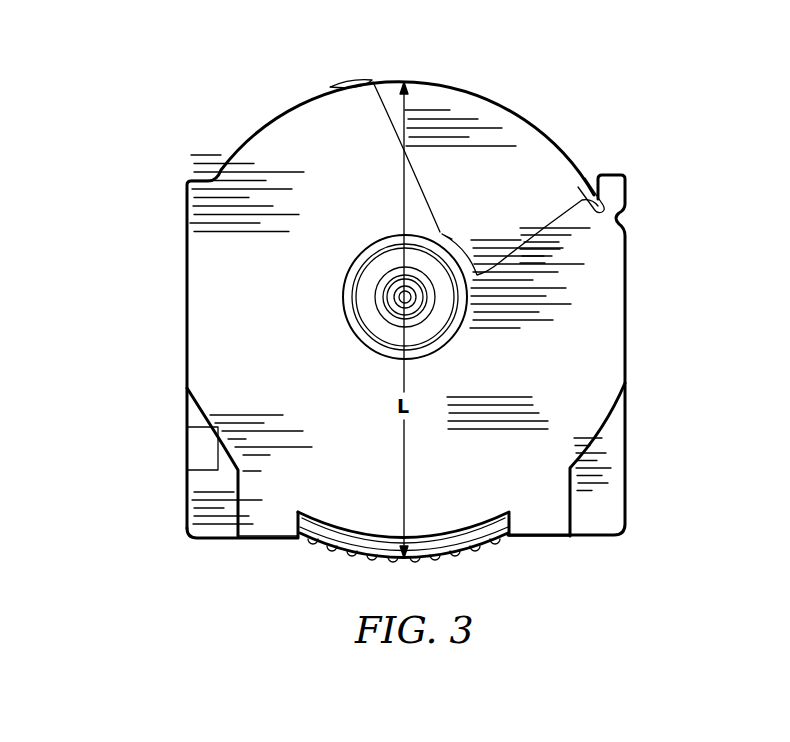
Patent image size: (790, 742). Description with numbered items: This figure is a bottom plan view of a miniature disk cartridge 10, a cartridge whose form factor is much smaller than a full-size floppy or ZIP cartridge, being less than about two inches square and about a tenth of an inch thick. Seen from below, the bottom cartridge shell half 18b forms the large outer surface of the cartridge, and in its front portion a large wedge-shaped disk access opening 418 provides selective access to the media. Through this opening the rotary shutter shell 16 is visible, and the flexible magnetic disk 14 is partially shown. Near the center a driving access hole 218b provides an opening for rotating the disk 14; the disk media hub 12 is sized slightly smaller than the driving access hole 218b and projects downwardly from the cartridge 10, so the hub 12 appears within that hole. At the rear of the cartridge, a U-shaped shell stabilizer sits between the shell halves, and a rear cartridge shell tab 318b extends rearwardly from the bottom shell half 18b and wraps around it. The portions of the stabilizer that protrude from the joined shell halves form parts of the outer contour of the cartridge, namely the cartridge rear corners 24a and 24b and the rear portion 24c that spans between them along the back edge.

The miniature disk cartridge 10 is at (143, 553).
The disk media hub 12 is at (378, 322).
The flexible magnetic disk 14 is at (352, 296).
The rotary shutter shell 16 is at (545, 130).
The bottom cartridge shell half 18b is at (590, 330).
The cartridge rear corner 24a is at (605, 512).
The cartridge rear corner 24b is at (203, 500).
The rear portion 24c is at (447, 557).
The driving access hole 218b is at (389, 232).
The rear cartridge shell tab 318b is at (287, 522).
The disk access opening 418 is at (473, 80).